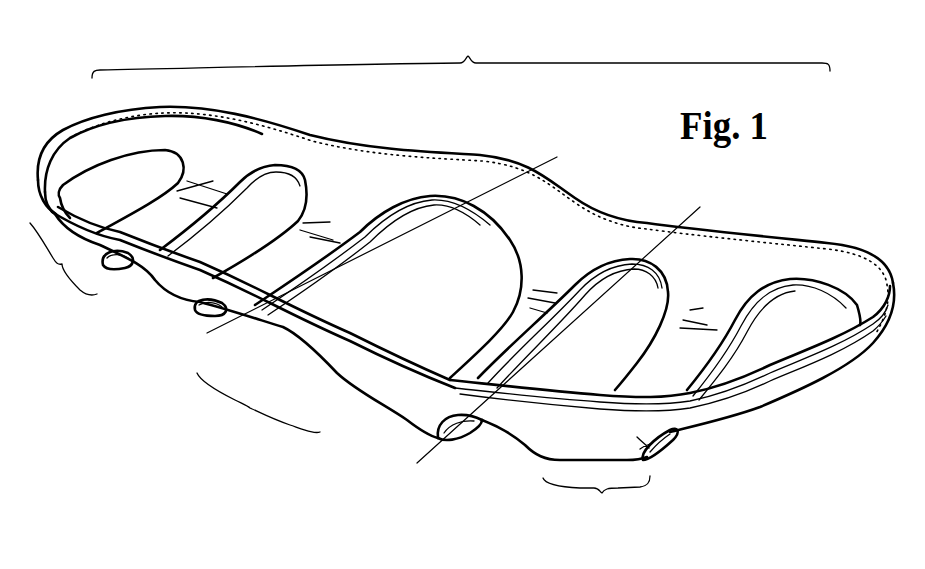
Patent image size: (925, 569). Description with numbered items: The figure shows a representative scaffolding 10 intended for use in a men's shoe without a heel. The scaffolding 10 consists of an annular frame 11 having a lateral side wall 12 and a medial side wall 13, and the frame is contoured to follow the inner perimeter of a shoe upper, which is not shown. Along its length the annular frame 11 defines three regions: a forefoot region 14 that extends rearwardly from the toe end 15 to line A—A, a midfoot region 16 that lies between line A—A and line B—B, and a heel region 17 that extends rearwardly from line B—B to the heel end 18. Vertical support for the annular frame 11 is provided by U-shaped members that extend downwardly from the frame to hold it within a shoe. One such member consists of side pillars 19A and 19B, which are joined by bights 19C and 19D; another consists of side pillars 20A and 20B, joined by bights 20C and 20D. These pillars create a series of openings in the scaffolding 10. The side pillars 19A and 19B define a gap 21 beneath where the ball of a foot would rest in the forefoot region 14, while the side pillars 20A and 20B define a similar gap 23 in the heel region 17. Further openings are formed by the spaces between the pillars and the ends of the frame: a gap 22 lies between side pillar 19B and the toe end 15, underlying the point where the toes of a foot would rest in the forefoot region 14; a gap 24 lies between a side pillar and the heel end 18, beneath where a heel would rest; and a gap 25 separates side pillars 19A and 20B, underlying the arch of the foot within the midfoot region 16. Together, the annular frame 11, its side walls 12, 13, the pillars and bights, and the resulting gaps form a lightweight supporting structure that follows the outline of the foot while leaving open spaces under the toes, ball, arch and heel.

The scaffolding 10 is at (461, 50).
The annular frame 11 is at (720, 230).
The lateral side wall 12 is at (313, 343).
The medial side wall 13 is at (477, 180).
The forefoot region 14 is at (596, 504).
The toe end 15 is at (858, 273).
The midfoot region 16 is at (258, 408).
The heel region 17 is at (232, 326).
The heel end 18 is at (72, 153).
The side pillar 19A is at (410, 413).
The side pillar 19B is at (657, 457).
The bight 19C is at (523, 337).
The bight 19D is at (670, 340).
The side pillar 20A is at (100, 270).
The side pillar 20B is at (173, 293).
The bight 20C is at (143, 217).
The bight 20D is at (273, 260).
The gap 21 is at (533, 430).
The gap 22 is at (793, 297).
The gap 23 is at (287, 188).
The gap 24 is at (153, 147).
The gap 25 is at (481, 224).
The line A- A is at (557, 333).
The line B- B is at (382, 245).